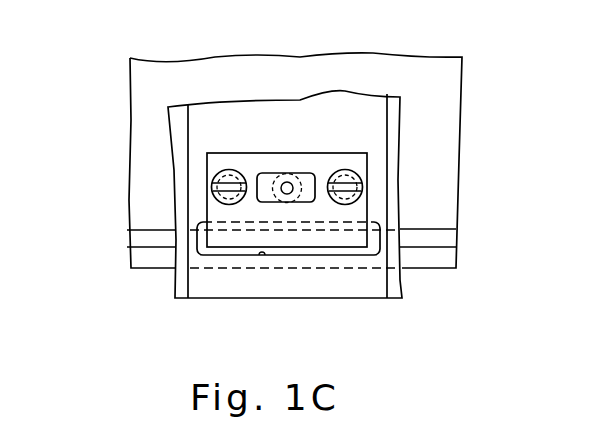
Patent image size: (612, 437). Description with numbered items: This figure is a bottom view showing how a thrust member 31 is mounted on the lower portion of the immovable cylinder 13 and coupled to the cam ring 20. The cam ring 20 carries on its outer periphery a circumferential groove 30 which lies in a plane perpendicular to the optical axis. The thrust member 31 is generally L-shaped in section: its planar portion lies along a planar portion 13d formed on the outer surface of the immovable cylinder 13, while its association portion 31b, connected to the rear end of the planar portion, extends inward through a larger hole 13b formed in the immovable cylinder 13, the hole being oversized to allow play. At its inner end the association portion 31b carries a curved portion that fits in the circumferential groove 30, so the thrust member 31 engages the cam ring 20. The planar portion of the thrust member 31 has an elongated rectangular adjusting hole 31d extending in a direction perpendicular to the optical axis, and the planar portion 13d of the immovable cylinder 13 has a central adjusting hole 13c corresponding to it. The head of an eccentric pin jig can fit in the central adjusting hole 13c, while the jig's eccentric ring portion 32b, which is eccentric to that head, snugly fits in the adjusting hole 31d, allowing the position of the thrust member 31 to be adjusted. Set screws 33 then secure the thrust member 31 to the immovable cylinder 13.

The cam ring 20 is at (440, 207).
The circumferential groove 30 is at (445, 237).
The immovable cylinder 13 is at (365, 105).
The planar portion 13d is at (197, 203).
The central adjusting hole 13c is at (286, 182).
The larger hole 13b is at (262, 255).
The thrust member 31 is at (342, 158).
The association portion 31b is at (358, 238).
The elongated rectangular adjusting hole 31d is at (302, 203).
The eccentric ring portion 32b is at (275, 174).
The set screws 33 is at (212, 174).